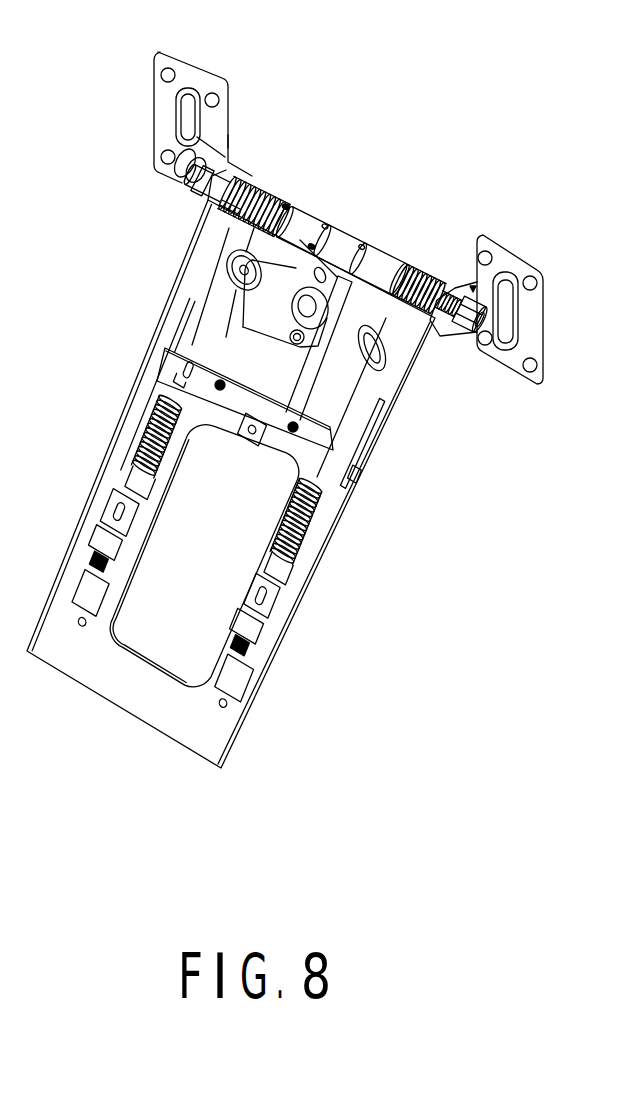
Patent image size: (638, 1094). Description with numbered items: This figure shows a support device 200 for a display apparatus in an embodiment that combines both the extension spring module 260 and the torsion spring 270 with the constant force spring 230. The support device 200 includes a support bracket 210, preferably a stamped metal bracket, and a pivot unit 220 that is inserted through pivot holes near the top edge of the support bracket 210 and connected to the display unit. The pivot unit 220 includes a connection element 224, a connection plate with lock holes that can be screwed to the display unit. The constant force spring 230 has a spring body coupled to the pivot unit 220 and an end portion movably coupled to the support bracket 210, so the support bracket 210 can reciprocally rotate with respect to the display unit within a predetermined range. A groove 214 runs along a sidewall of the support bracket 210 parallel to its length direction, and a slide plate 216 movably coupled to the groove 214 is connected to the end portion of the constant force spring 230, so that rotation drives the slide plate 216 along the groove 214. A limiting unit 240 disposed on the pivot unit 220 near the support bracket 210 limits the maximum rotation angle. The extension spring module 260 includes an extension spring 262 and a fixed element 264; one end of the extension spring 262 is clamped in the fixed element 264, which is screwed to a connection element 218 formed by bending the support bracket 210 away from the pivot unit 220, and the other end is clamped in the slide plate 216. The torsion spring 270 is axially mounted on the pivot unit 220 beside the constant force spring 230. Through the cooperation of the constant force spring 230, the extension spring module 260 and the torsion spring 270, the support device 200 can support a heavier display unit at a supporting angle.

The support device 200 is at (285, 441).
The support bracket 210 is at (200, 727).
The groove 214 is at (383, 402).
The slide plate 216 is at (173, 363).
The connection element 218 is at (257, 667).
The pivot unit 220 is at (226, 166).
The connection element 224 is at (186, 80).
The constant force spring 230 is at (326, 378).
The limiting unit 240 is at (432, 276).
The extension spring module 260 is at (343, 573).
The extension spring 262 is at (302, 530).
The fixed element 264 is at (253, 628).
The torsion spring 270 is at (397, 265).